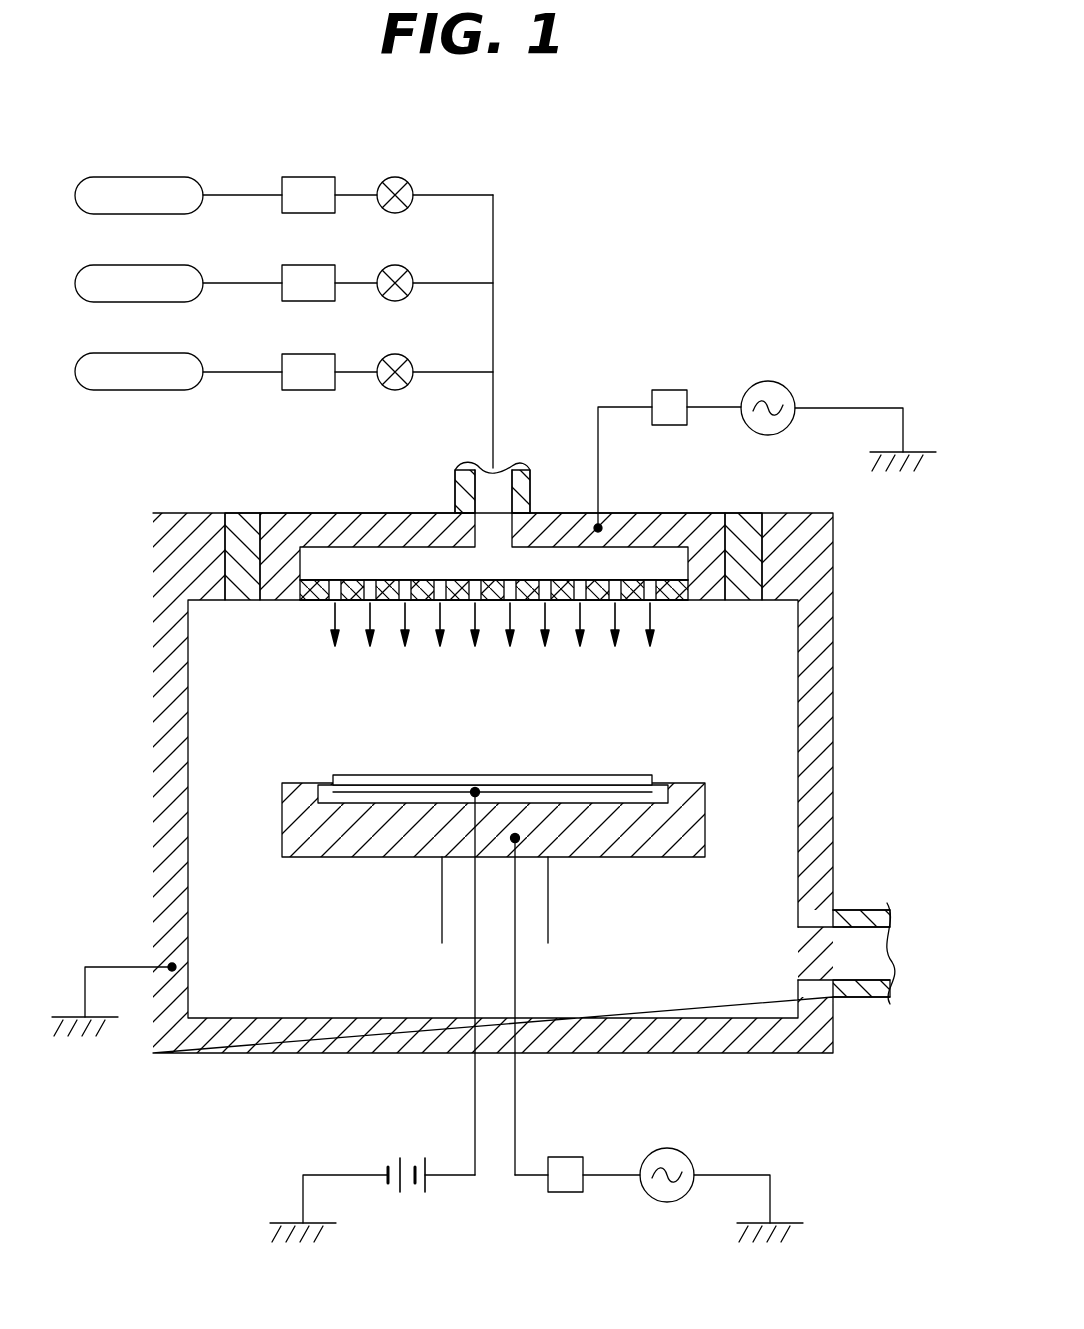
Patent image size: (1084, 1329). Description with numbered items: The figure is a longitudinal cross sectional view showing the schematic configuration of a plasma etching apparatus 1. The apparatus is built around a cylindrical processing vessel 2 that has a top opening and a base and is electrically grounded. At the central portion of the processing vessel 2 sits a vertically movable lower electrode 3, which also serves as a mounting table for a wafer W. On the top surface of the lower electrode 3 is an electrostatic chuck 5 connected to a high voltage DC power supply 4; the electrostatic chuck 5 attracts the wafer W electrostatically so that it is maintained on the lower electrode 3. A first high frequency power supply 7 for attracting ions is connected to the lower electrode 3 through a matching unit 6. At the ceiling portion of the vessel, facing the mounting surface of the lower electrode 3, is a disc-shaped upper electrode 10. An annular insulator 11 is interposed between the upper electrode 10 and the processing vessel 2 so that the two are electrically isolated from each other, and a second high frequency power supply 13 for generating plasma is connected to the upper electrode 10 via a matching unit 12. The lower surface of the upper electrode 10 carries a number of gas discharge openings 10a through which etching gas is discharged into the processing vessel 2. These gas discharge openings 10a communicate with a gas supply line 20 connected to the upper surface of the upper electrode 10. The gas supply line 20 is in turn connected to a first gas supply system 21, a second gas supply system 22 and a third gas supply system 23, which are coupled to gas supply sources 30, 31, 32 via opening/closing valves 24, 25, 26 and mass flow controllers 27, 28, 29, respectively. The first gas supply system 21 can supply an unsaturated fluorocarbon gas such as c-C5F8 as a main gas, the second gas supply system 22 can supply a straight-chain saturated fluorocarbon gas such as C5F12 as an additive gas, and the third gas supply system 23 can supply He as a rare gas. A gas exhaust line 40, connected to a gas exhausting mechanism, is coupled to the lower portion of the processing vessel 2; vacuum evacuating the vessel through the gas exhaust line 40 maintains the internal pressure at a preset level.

The plasma etching apparatus 1 is at (648, 230).
The processing vessel 2 is at (833, 593).
The lower electrode 3 is at (705, 818).
The high voltage DC power supply 4 is at (402, 1195).
The electrostatic chuck 5 is at (608, 785).
The matching unit 6 is at (566, 1192).
The first high frequency power supply 7 is at (671, 1202).
The upper electrode 10 is at (300, 513).
The gas discharge openings 10a is at (403, 590).
The annular insulator 11 is at (243, 600).
The matching unit 12 is at (670, 390).
The second high frequency power supply 13 is at (770, 382).
The gas supply line 20 is at (493, 420).
The first gas supply system 21 is at (478, 372).
The second gas supply system 22 is at (478, 283).
The third gas supply system 23 is at (478, 195).
The opening/closing valve 24 is at (399, 356).
The opening/closing valve 25 is at (399, 267).
The opening/closing valve 26 is at (399, 178).
The mass flow controller 27 is at (312, 353).
The mass flow controller 28 is at (312, 265).
The mass flow controller 29 is at (312, 177).
The gas supply source 30 is at (140, 353).
The gas supply source 31 is at (140, 265).
The gas supply source 32 is at (140, 177).
The gas exhaust line 40 is at (861, 998).
The wafer W is at (450, 775).